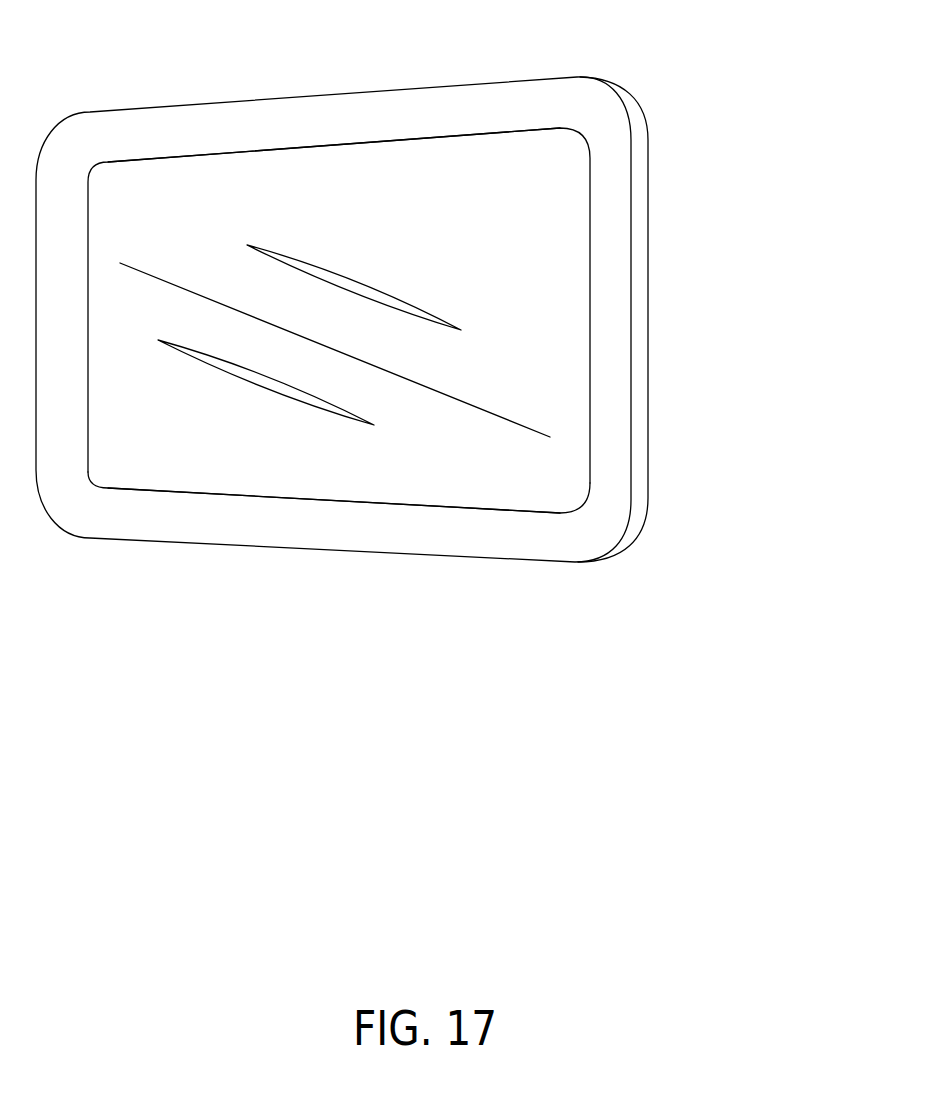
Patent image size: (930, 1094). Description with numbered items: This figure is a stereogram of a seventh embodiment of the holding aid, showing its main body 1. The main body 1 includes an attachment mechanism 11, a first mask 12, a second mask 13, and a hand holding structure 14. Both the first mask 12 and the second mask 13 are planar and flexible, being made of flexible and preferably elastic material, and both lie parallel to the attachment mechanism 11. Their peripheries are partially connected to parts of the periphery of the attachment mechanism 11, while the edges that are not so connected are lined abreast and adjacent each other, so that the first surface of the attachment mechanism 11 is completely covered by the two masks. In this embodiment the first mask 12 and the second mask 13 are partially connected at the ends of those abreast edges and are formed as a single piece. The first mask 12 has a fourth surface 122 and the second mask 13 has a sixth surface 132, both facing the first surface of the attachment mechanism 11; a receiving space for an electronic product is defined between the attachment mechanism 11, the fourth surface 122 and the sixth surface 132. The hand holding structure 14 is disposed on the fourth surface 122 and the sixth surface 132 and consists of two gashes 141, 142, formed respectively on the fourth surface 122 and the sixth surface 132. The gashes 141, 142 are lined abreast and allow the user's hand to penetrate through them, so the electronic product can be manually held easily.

The main body 1 is at (405, 315).
The attachment mechanism 11 is at (202, 127).
The first mask 12 is at (388, 183).
The fourth surface 122 is at (484, 180).
The second mask 13 is at (272, 468).
The sixth surface 132 is at (417, 480).
The hand holding structure 14 is at (447, 337).
The gash 141 is at (357, 288).
The gash 142 is at (271, 386).